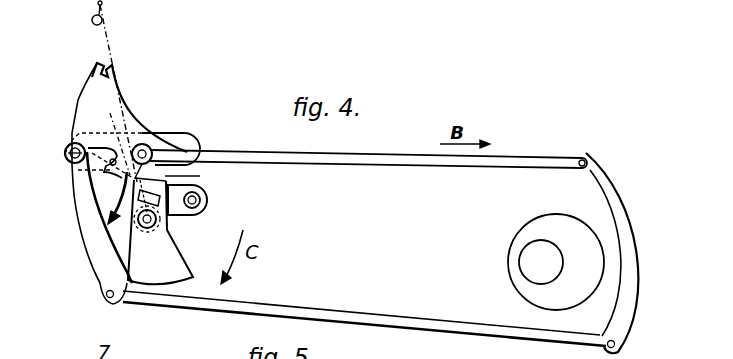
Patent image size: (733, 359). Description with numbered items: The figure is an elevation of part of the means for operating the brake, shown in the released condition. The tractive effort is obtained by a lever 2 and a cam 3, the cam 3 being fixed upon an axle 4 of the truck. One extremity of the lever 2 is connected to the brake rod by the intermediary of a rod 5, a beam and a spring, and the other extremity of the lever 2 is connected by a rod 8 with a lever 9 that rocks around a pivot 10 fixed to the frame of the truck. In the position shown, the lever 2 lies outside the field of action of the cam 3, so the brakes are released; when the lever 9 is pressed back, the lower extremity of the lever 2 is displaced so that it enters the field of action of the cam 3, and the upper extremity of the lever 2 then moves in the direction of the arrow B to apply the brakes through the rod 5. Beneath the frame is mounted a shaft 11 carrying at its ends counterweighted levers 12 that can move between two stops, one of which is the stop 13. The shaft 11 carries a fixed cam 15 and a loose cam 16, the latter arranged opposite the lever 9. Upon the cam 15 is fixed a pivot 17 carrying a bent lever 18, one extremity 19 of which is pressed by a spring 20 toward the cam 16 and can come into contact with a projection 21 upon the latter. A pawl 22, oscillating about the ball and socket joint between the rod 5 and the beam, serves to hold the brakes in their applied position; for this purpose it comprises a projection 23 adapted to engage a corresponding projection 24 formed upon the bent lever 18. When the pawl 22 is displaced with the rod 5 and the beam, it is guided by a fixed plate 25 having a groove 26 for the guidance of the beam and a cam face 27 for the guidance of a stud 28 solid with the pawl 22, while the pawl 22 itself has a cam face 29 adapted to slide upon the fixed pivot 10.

The lever 2 is at (633, 258).
The cam 3 is at (556, 262).
The axle 4 is at (530, 258).
The rod 5 is at (361, 165).
The rod 8 is at (340, 314).
The lever 9 is at (90, 250).
The pivot 10 is at (66, 153).
The shaft 11 is at (163, 225).
The lever 12 is at (110, 33).
The stop 13 is at (92, 22).
The fixed cam 15 is at (200, 176).
The loose cam 16 is at (160, 232).
The pivot 17 is at (128, 179).
The bent lever 18 is at (122, 198).
The extremity of the bent lever 19 is at (200, 203).
The spring 20 is at (205, 188).
The projection 21 is at (168, 217).
The pawl 22 is at (110, 97).
The projection 23 is at (92, 167).
The projection 24 is at (107, 222).
The fixed plate 25 is at (193, 139).
The groove 26 is at (165, 143).
The cam face 27 is at (115, 133).
The stud 28 is at (115, 181).
The cam face 29 is at (80, 105).